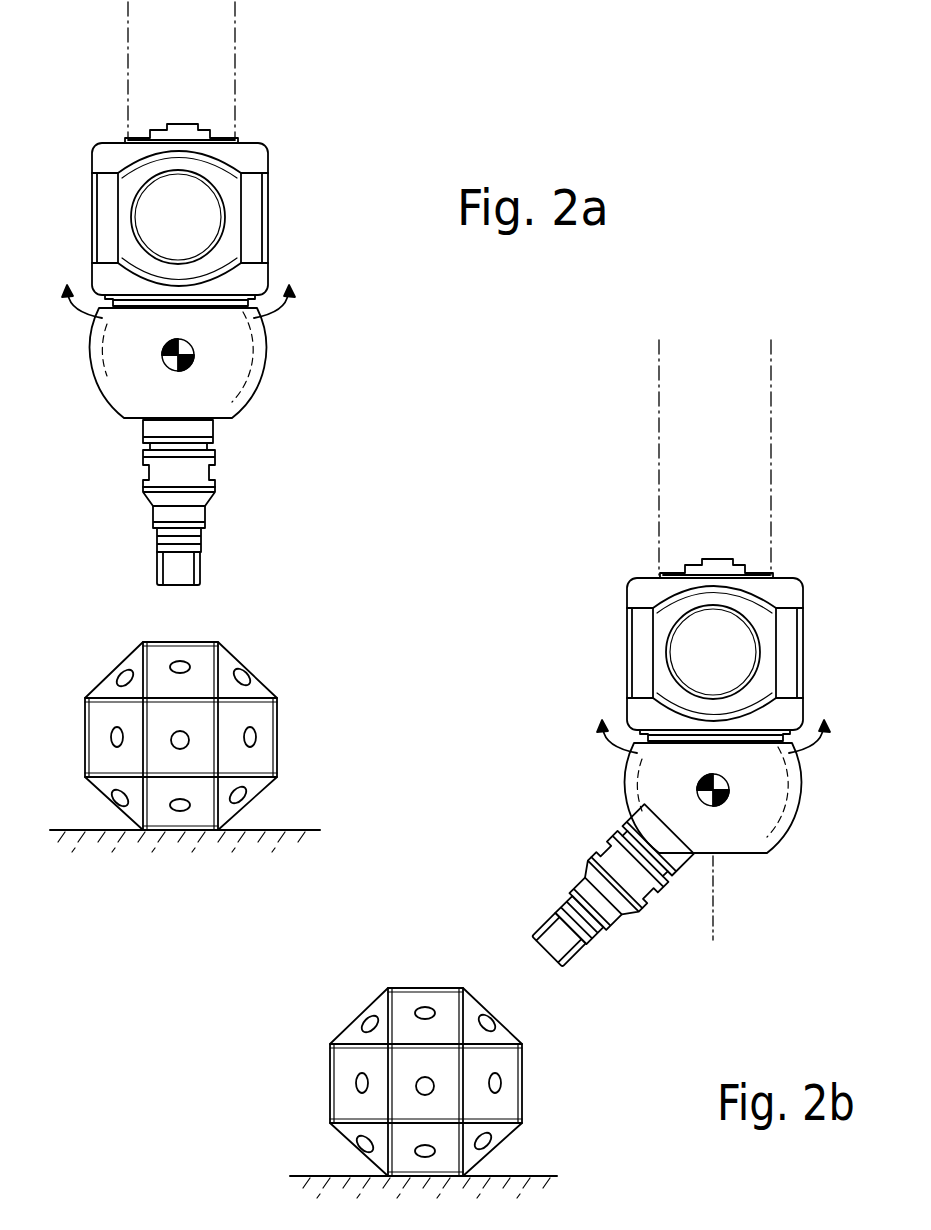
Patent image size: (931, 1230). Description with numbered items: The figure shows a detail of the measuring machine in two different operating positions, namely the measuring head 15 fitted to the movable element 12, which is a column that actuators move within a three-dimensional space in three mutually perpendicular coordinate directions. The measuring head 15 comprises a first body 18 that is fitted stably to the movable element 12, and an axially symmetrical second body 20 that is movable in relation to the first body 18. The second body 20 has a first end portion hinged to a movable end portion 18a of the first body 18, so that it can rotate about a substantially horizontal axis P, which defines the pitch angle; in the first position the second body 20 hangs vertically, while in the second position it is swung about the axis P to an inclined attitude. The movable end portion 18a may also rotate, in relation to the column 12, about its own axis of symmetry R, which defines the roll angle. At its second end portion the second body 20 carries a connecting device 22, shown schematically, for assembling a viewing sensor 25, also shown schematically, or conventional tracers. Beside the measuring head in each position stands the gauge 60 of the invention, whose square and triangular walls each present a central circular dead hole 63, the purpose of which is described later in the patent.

In FIG. 2A, the movable element (column) 12 is at (221, 87).
In FIG. 2B, the movable element (column) 12 is at (656, 498).
In FIG. 2A, the measuring head 15 is at (328, 296).
In FIG. 2B, the measuring head 15 is at (593, 690).
In FIG. 2A, the first body 18 is at (268, 187).
In FIG. 2B, the first body 18 is at (627, 634).
In FIG. 2A, the movable end portion 18a is at (242, 363).
In FIG. 2B, the movable end portion 18a is at (683, 804).
In FIG. 2A, the second body 20 is at (229, 503).
In FIG. 2B, the second body 20 is at (585, 885).
In FIG. 2A, the connecting device 22 is at (205, 535).
In FIG. 2B, the connecting device 22 is at (572, 898).
In FIG. 2A, the viewing sensor 25 is at (205, 586).
In FIG. 2B, the viewing sensor 25 is at (531, 955).
In FIG. 2A, the gauge 60 is at (179, 745).
In FIG. 2B, the gauge 60 is at (406, 1076).
In FIG. 2A, the central circular dead hole 63 is at (254, 733).
In FIG. 2B, the central circular dead hole 63 is at (485, 1020).
In FIG. 2A, the horizontal axis (pitch axis) P is at (195, 362).
In FIG. 2B, the horizontal axis (pitch axis) P is at (728, 802).
In FIG. 2A, the axis of symmetry (roll axis) R is at (180, 613).
In FIG. 2B, the axis of symmetry (roll axis) R is at (716, 883).